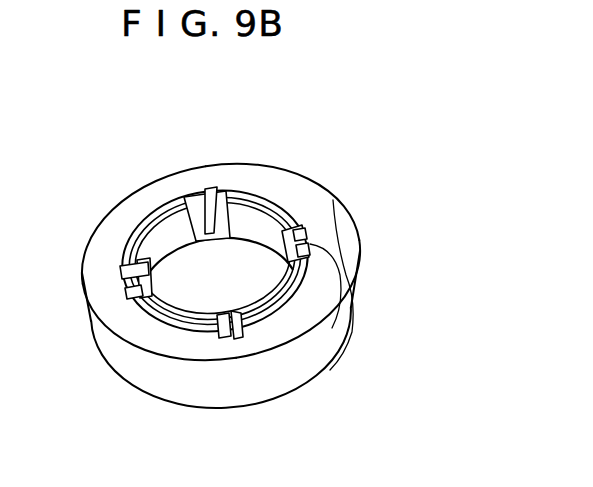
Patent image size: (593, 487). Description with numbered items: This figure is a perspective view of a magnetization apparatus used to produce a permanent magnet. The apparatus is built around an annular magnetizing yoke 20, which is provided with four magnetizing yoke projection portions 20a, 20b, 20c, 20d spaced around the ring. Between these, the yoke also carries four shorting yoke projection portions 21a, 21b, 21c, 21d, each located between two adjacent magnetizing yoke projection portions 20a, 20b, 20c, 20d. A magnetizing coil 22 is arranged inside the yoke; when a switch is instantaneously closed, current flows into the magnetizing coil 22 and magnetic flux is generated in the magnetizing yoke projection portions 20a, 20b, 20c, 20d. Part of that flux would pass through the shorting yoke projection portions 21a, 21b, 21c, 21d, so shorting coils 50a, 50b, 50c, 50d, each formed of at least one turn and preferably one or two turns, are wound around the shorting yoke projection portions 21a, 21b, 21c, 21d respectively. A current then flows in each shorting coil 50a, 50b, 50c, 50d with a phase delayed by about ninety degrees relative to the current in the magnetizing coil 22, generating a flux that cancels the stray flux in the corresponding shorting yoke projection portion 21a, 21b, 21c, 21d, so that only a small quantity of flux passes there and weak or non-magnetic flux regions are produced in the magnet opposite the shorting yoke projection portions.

The magnetizing yoke 20 is at (212, 256).
The magnetizing yoke projection portion 20a is at (293, 298).
The magnetizing yoke projection portion 20b is at (150, 318).
The magnetizing yoke projection portion 20c is at (141, 233).
The magnetizing yoke projection portion 20d is at (262, 190).
The shorting yoke projection portion 21a is at (311, 243).
The shorting yoke projection portion 21b is at (236, 340).
The shorting yoke projection portion 21c is at (120, 277).
The shorting yoke projection portion 21d is at (208, 188).
The magnetizing coil 22 is at (270, 318).
The shorting coil 50a is at (309, 245).
The shorting coil 50b is at (226, 340).
The shorting coil 50c is at (120, 289).
The shorting coil 50d is at (197, 192).